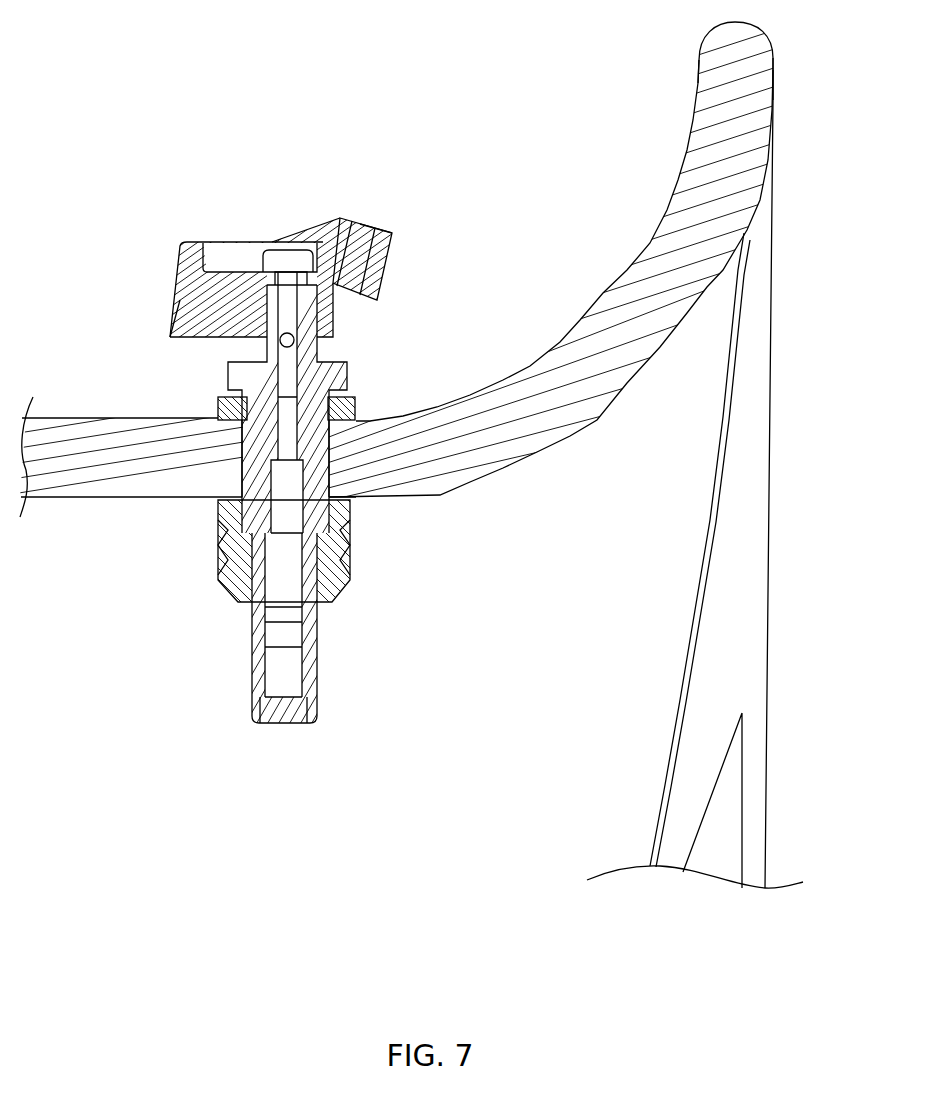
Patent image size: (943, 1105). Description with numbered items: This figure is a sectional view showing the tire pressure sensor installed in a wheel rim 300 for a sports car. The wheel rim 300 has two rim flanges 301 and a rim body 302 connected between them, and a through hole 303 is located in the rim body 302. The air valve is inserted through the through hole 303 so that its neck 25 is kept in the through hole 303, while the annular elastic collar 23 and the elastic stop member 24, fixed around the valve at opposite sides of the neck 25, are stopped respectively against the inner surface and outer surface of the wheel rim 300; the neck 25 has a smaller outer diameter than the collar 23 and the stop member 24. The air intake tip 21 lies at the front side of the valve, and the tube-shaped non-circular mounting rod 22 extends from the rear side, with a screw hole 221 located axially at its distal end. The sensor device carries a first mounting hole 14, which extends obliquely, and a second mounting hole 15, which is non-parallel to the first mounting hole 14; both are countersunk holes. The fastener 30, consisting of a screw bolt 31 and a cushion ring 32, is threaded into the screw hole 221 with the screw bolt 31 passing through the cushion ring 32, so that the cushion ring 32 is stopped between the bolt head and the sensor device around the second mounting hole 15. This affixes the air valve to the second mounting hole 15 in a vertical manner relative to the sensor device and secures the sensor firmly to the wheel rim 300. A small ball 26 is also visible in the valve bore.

The first mounting hole 14 is at (368, 240).
The second mounting hole 15 is at (252, 320).
The air intake tip 21 is at (255, 680).
The non-circular mounting rod 22 is at (318, 327).
The screw hole 221 is at (320, 297).
The annular elastic collar 23 is at (225, 548).
The elastic stop member 24 is at (225, 405).
The neck 25 is at (348, 418).
The ball 26 is at (283, 345).
The fastener 30 is at (271, 252).
The screw bolt 31 is at (273, 262).
The cushion ring 32 is at (260, 267).
The wheel rim 300 is at (778, 472).
The rim flange 301 is at (712, 137).
The rim body 302 is at (58, 437).
The through hole 303 is at (243, 450).